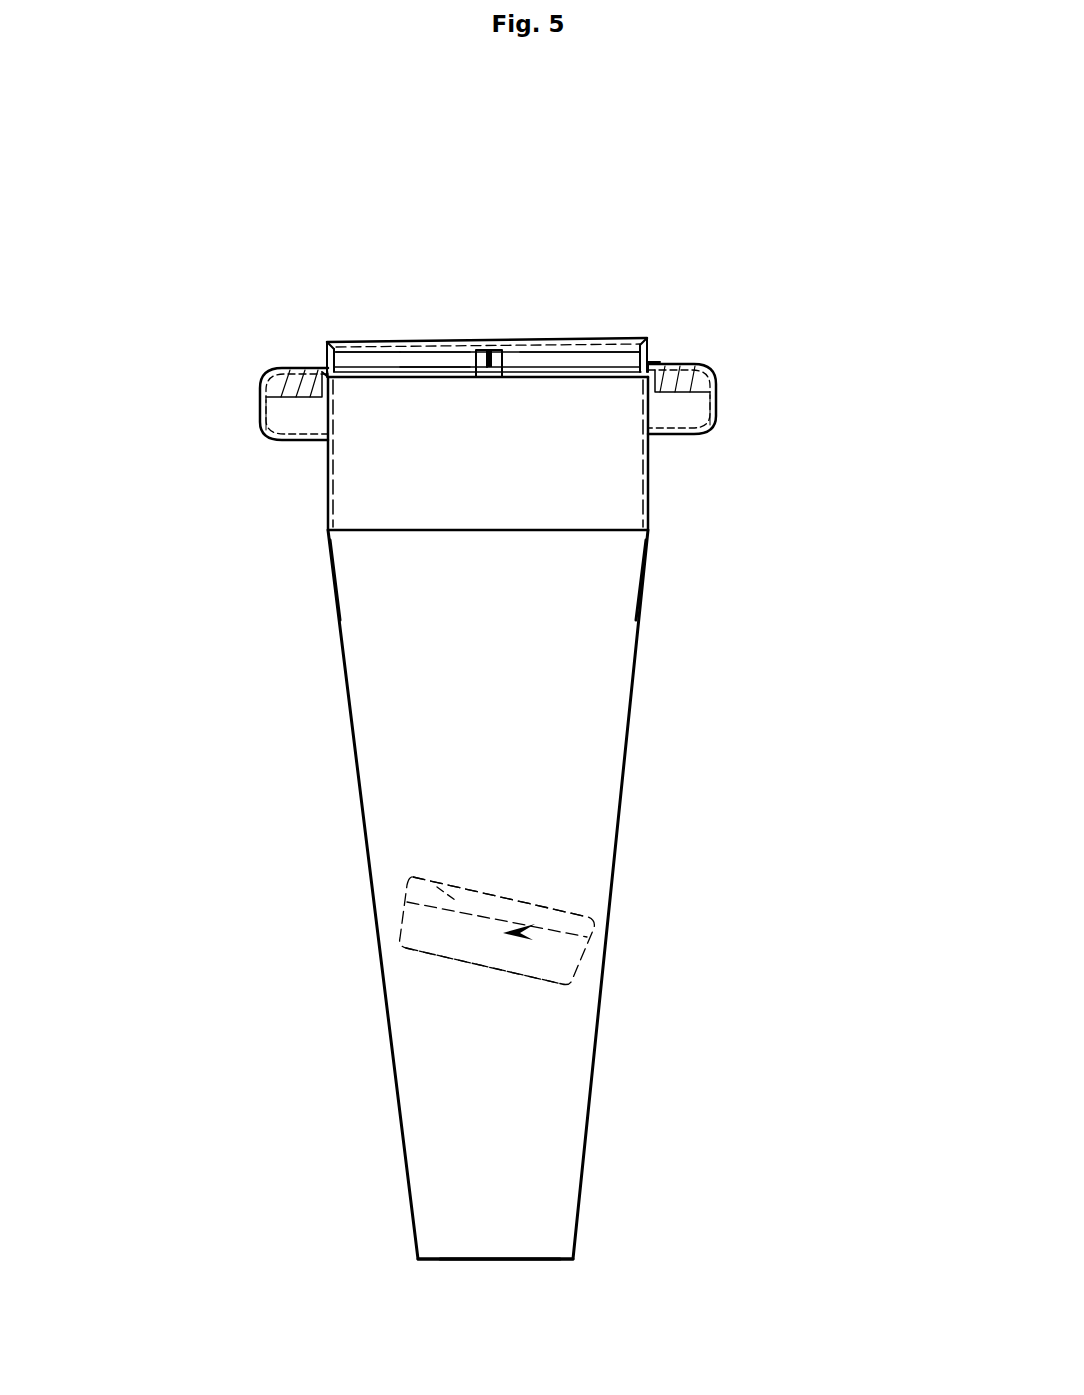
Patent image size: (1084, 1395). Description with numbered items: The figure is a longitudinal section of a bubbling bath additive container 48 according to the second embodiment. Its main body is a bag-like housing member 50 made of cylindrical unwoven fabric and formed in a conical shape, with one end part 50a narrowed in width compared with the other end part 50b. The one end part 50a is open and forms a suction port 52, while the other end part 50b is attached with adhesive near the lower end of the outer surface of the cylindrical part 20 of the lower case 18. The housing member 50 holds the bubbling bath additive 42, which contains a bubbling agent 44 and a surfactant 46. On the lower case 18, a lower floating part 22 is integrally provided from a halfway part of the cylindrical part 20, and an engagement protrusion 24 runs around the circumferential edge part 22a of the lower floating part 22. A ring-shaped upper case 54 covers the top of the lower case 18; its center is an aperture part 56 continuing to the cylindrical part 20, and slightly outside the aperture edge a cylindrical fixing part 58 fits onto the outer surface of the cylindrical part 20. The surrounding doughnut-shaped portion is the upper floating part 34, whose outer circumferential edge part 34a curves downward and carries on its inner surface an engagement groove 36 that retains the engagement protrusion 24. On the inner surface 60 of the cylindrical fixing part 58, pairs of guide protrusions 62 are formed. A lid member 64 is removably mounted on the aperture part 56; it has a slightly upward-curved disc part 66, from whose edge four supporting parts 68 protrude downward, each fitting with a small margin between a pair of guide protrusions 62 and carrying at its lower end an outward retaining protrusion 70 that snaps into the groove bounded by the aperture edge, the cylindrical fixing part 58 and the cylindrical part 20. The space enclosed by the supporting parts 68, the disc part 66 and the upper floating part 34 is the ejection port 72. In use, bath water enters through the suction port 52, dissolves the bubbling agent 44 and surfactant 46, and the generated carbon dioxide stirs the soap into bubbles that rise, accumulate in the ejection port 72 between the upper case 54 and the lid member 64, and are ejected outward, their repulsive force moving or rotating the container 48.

The lower case 18 is at (722, 426).
The cylindrical part 20 is at (393, 535).
The lower floating part 22 is at (283, 445).
The circumferential edge part 22a is at (277, 372).
The engagement protrusion 24 is at (268, 403).
The upper floating part 34 is at (707, 372).
The outer circumferential edge part 34a is at (713, 392).
The engagement groove 36 is at (714, 404).
The bubbling bath additive 42 is at (540, 925).
The bubbling agent 44 is at (470, 943).
The surfactant 46 is at (410, 877).
The bubbling bath additive container 48 is at (730, 211).
The housing member 50 is at (604, 1046).
The one end part 50a is at (435, 1245).
The other end part 50b is at (560, 562).
The suction port 52 is at (518, 1260).
The upper case 54 is at (680, 360).
The aperture part 56 is at (393, 368).
The cylindrical fixing part 58 is at (325, 373).
The inner surface 60 is at (590, 368).
The guide protrusions 62 is at (474, 373).
The lid member 64 is at (560, 336).
The disc part 66 is at (353, 344).
The supporting part 68 is at (321, 344).
The retaining protrusion 70 is at (323, 371).
The ejection port 72 is at (430, 358).